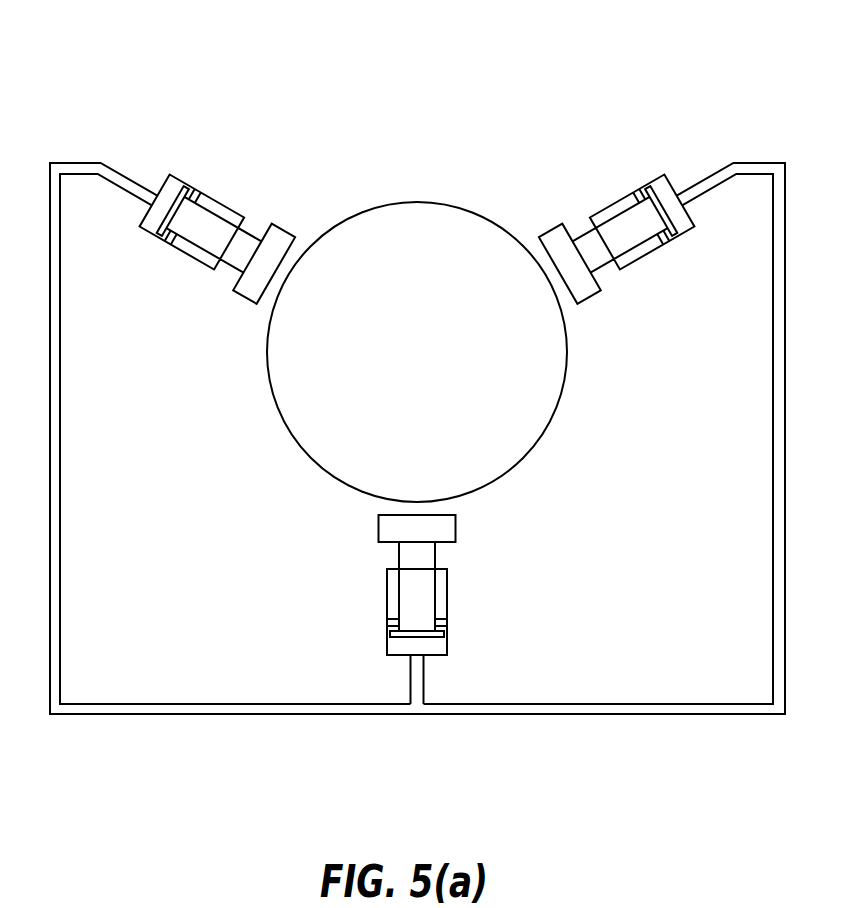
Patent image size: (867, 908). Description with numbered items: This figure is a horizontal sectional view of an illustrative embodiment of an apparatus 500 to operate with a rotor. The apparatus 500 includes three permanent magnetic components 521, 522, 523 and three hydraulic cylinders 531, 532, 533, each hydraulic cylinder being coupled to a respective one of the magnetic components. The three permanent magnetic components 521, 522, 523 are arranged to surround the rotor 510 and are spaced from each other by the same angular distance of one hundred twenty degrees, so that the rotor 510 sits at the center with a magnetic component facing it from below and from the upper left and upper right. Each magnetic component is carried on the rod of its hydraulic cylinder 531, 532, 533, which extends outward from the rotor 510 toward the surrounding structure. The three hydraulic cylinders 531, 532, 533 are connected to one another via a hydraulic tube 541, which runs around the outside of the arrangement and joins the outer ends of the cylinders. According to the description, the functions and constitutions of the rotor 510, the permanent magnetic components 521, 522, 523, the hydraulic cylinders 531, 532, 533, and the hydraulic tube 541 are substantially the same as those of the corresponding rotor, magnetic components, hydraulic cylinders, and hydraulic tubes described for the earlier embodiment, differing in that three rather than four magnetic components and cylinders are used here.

The apparatus 500 is at (85, 78).
The rotor 510 is at (437, 203).
The magnetic component 521 is at (378, 530).
The magnetic component 522 is at (600, 303).
The magnetic component 523 is at (285, 222).
The hydraulic cylinder 531 is at (387, 649).
The hydraulic cylinder 532 is at (694, 226).
The hydraulic cylinder 533 is at (190, 172).
The hydraulic tube 541 is at (604, 715).